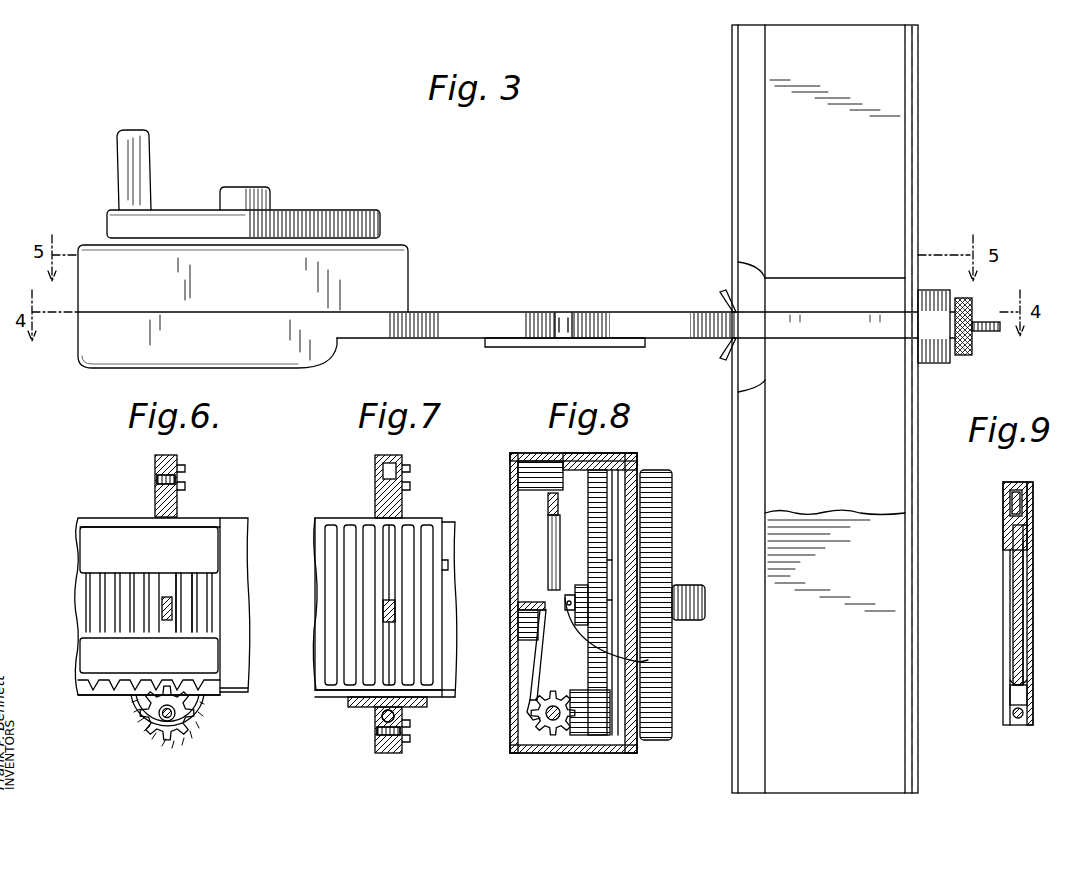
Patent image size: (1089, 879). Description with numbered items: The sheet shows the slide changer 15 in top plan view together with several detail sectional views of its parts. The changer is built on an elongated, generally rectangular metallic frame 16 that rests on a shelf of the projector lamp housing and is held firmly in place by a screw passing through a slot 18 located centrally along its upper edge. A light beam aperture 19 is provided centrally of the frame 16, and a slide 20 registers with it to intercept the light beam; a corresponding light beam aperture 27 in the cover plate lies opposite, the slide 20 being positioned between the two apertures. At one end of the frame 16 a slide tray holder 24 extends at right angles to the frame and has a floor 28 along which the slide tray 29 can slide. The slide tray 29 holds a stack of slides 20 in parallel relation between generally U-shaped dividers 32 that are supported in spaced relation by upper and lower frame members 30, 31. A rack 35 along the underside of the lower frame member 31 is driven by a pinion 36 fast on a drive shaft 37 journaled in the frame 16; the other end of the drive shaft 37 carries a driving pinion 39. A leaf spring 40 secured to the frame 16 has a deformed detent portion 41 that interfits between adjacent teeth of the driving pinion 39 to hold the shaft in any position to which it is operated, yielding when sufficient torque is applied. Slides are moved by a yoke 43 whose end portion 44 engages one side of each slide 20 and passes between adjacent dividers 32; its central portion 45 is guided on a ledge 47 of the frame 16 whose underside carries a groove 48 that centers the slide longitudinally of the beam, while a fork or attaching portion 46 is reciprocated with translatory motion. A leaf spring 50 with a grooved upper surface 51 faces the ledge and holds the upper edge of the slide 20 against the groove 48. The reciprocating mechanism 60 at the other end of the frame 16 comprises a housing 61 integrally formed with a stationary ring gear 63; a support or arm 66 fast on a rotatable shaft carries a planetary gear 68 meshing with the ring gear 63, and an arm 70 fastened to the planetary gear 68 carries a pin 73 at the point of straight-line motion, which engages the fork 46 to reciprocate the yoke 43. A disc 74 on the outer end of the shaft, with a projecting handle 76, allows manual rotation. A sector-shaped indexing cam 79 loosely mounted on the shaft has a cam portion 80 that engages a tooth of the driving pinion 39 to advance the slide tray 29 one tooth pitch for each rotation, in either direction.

In FIG. 3, the slide changer 15 is at (360, 162).
In FIG. 3, the elongated generally rectangular metallic frame 16 is at (454, 292).
In FIG. 6, the elongated generally rectangular metallic frame 16 is at (155, 464).
In FIG. 7, the elongated generally rectangular metallic frame 16 is at (375, 480).
In FIG. 8, the elongated generally rectangular metallic frame 16 is at (518, 466).
In FIG. 9, the elongated generally rectangular metallic frame 16 is at (1003, 500).
In FIG. 3, the slot 18 is at (568, 312).
In FIG. 9, the light beam aperture 19 is at (1003, 610).
In FIG. 9, the slide 20 is at (1023, 570).
In FIG. 3, the slide tray holder 24 is at (953, 131).
In FIG. 9, the light beam aperture 27 is at (1030, 620).
In FIG. 3, the floor 28 is at (835, 179).
In FIG. 6, the floor 28 is at (236, 696).
In FIG. 7, the floor 28 is at (452, 698).
In FIG. 3, the slide tray 29 is at (835, 528).
In FIG. 6, the upper frame member 30 is at (149, 550).
In FIG. 7, the upper frame member 30 is at (333, 518).
In FIG. 6, the lower frame member 31 is at (149, 655).
In FIG. 7, the lower frame member 31 is at (330, 690).
In FIG. 6, the U-shaped dividers 32 is at (212, 618).
In FIG. 7, the U-shaped dividers 32 is at (415, 652).
In FIG. 8, the U-shaped dividers 32 is at (528, 625).
In FIG. 6, the rack 35 is at (100, 690).
In FIG. 6, the pinion 36 is at (150, 730).
In FIG. 6, the drive shaft 37 is at (167, 722).
In FIG. 8, the drive shaft 37 is at (548, 722).
In FIG. 9, the drive shaft 37 is at (1016, 720).
In FIG. 8, the driving pinion 39 is at (558, 732).
In FIG. 8, the leaf spring 40 is at (532, 670).
In FIG. 8, the detent portion 41 is at (533, 718).
In FIG. 3, the yoke 43 is at (1012, 338).
In FIG. 6, the end portion 44 is at (172, 604).
In FIG. 7, the end portion 44 is at (395, 608).
In FIG. 8, the central portion 45 is at (548, 500).
In FIG. 9, the central portion 45 is at (1022, 482).
In FIG. 8, the fork or attaching portion 46 is at (552, 550).
In FIG. 9, the ledge 47 is at (1025, 512).
In FIG. 9, the groove 48 is at (1030, 540).
In FIG. 9, the leaf spring 50 is at (1027, 695).
In FIG. 9, the grooved upper surface 51 is at (1027, 680).
In FIG. 8, the mechanism 60 is at (534, 444).
In FIG. 8, the housing 61 is at (614, 472).
In FIG. 8, the stationary ring gear 63 is at (600, 500).
In FIG. 8, the support or arm 66 is at (625, 592).
In FIG. 8, the planetary gear 68 is at (607, 540).
In FIG. 8, the arm 70 is at (572, 585).
In FIG. 8, the pin 73 is at (640, 662).
In FIG. 3, the disc 74 is at (322, 210).
In FIG. 8, the disc 74 is at (672, 650).
In FIG. 3, the handle 76 is at (148, 152).
In FIG. 8, the handle 76 is at (698, 586).
In FIG. 8, the indexing cam 79 is at (612, 560).
In FIG. 8, the cam portion 80 is at (597, 715).